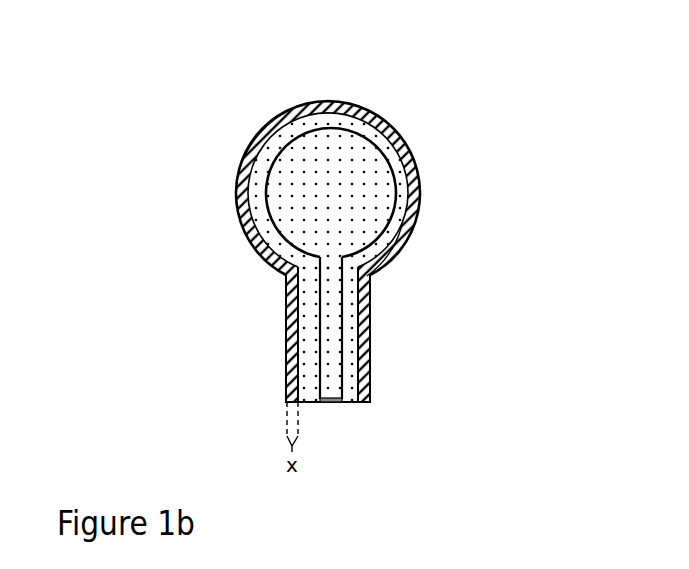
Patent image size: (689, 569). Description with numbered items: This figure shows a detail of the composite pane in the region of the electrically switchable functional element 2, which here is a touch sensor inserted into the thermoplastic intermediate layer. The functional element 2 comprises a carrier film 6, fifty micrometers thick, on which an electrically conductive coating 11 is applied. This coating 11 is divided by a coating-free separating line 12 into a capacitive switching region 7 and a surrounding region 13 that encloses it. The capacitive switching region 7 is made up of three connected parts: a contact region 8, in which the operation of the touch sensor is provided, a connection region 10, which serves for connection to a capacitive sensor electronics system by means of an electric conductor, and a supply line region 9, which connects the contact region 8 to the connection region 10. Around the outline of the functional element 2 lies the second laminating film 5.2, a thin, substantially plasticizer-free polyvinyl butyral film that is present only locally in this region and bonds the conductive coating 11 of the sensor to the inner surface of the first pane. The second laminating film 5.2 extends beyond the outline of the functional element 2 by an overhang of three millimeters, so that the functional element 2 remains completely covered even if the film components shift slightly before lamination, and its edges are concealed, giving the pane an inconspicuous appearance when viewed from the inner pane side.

The functional element 2 is at (238, 176).
The second laminating film 5.2 is at (420, 188).
The carrier film 6 is at (403, 240).
The capacitive switching region 7 is at (340, 140).
The contact region 8 is at (373, 165).
The supply line region 9 is at (328, 297).
The connection region 10 is at (327, 388).
The electrically conductive coating 11 is at (275, 242).
The separating line 12 is at (277, 152).
The surrounding region 13 is at (322, 122).